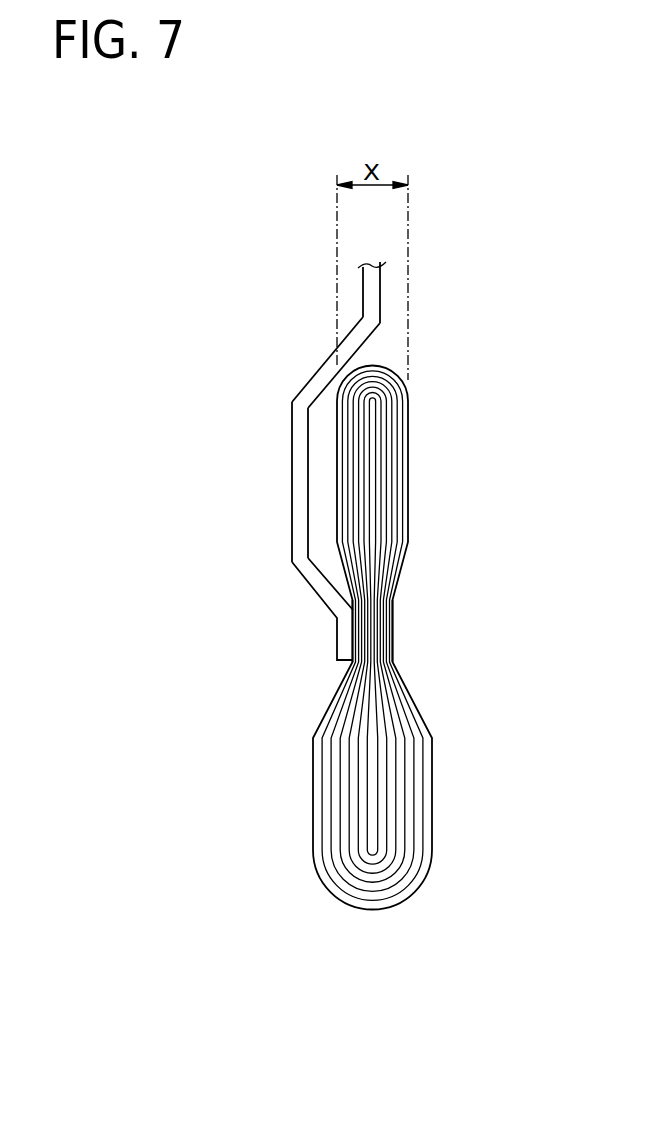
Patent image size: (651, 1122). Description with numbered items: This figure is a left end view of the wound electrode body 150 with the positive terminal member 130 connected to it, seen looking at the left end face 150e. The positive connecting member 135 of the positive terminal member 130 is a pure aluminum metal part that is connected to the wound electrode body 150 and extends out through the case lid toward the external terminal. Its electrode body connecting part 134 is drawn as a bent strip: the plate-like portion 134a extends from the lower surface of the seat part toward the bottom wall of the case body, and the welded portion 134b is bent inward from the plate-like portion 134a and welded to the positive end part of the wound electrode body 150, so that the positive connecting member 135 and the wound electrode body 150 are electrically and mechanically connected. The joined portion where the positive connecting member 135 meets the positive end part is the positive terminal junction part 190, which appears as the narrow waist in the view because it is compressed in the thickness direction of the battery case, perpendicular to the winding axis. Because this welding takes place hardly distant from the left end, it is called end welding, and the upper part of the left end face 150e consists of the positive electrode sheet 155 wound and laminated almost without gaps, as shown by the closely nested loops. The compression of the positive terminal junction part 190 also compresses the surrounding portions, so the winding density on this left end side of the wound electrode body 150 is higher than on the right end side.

The positive terminal member 130 is at (264, 379).
The positive connecting member 135 is at (292, 446).
The electrode body connecting part 134 is at (220, 531).
The plate-like portion 134a is at (293, 523).
The welded portion 134b is at (337, 635).
The wound electrode body 150 is at (430, 634).
The left end face 150e is at (383, 473).
The positive electrode sheet 155 is at (408, 430).
The positive terminal junction part 190 is at (393, 637).